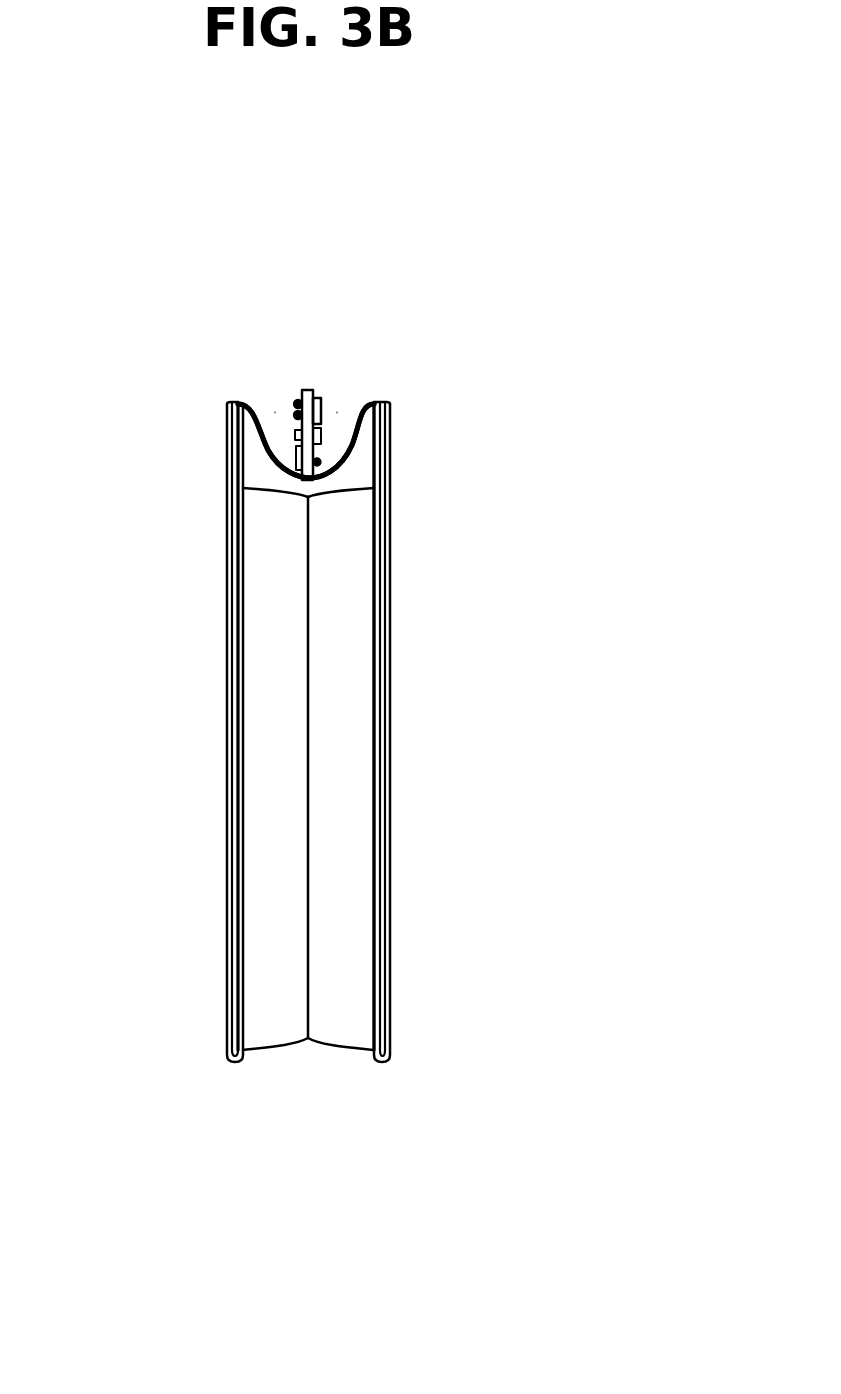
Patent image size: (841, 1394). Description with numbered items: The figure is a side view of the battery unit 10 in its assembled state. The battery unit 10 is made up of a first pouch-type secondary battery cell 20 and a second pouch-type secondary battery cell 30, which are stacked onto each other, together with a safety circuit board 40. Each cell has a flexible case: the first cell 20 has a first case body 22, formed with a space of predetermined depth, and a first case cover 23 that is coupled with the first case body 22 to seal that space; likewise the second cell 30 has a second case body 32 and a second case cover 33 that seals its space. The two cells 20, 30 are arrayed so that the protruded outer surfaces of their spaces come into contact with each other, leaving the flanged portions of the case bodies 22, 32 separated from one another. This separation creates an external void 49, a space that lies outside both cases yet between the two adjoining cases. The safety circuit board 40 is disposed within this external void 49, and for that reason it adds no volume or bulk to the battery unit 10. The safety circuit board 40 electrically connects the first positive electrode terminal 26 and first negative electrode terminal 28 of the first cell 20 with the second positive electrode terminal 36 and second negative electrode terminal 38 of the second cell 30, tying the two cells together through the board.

The battery unit 10 is at (86, 283).
The first pouch-type secondary battery cell 20 is at (244, 1112).
The second pouch-type secondary battery cell 30 is at (374, 1112).
The first case body 22 is at (270, 918).
The second case body 32 is at (360, 913).
The first case cover 23 is at (226, 810).
The second case cover 33 is at (392, 803).
The first positive electrode terminal 26 is at (248, 393).
The first negative electrode terminal 28 is at (233, 383).
The second positive electrode terminal 36 is at (373, 400).
The second negative electrode terminal 38 is at (388, 383).
The safety circuit board 40 is at (310, 390).
The external void 49 is at (275, 412).